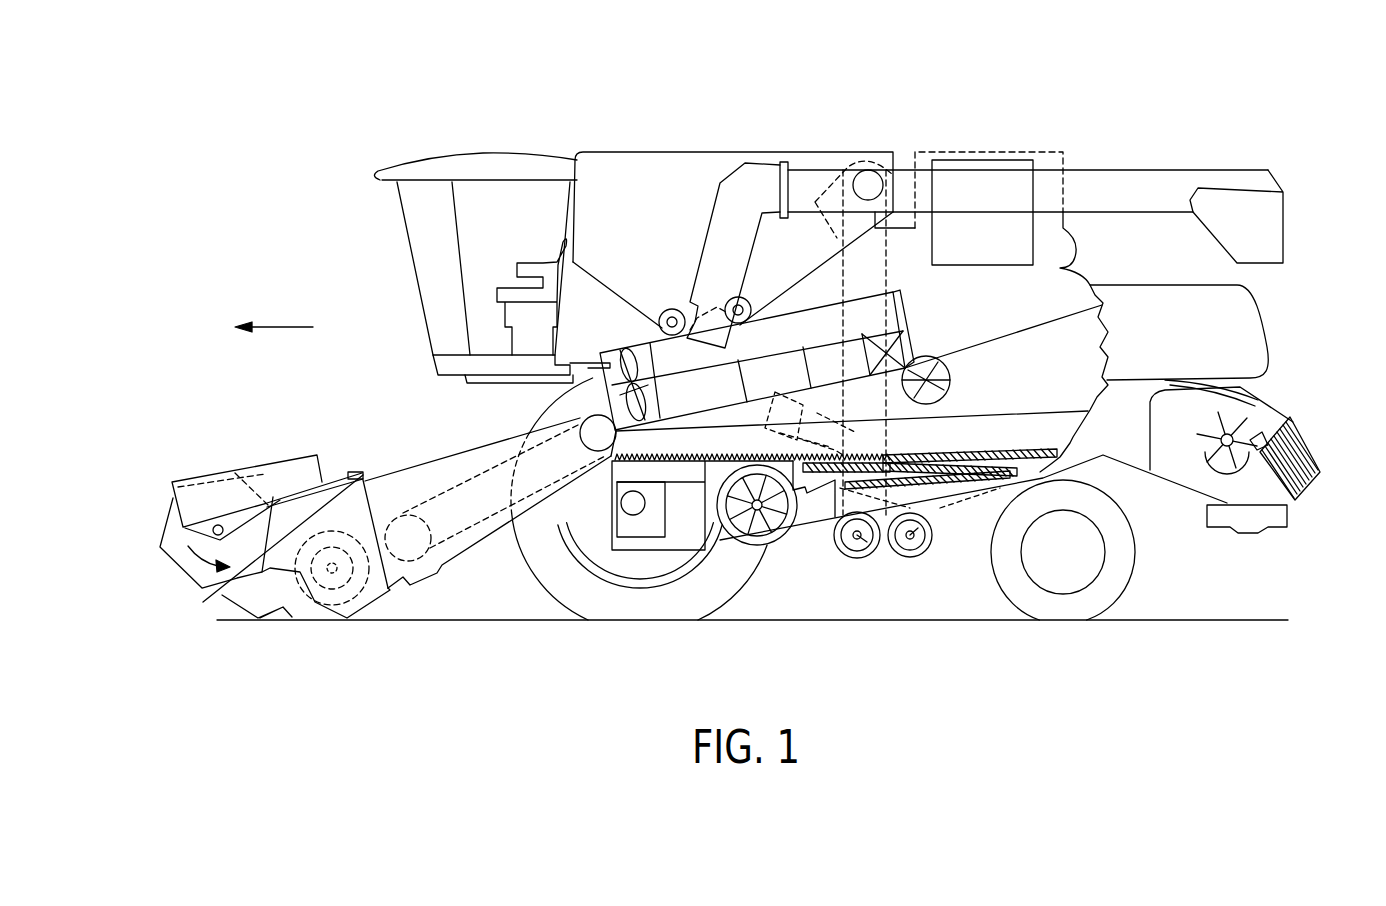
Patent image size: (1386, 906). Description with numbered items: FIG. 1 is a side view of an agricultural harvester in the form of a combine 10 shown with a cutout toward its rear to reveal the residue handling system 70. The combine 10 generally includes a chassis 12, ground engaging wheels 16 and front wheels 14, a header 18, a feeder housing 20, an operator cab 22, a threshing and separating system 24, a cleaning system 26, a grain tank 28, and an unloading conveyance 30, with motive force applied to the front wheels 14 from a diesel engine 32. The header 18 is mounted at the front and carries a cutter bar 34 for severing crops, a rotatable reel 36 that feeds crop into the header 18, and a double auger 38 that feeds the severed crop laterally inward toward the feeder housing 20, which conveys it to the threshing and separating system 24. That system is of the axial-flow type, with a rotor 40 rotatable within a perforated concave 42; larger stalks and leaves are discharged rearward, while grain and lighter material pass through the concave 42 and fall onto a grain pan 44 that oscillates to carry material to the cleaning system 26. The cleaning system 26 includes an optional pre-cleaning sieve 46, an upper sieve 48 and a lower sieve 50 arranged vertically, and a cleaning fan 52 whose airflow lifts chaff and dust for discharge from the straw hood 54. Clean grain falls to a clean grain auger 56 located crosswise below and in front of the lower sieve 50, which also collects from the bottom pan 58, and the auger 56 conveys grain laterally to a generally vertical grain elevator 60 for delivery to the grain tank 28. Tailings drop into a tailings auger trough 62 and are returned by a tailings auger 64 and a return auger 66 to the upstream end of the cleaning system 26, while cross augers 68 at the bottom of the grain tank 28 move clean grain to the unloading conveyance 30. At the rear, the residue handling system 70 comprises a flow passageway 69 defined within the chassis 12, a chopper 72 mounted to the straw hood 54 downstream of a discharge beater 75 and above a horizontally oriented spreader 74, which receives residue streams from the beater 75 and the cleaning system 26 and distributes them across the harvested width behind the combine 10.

The combine 10 is at (477, 140).
The chassis 12 is at (1095, 480).
The front wheels 14 is at (552, 582).
The ground engaging wheels 16 is at (1127, 560).
The header 18 is at (245, 458).
The feeder housing 20 is at (437, 463).
The operator cab 22 is at (413, 248).
The threshing and separating system 24 is at (557, 395).
The cleaning system 26 is at (830, 540).
The grain tank 28 is at (635, 148).
The unloading conveyance 30 is at (1160, 168).
The diesel engine 32 is at (970, 158).
The cutter bar 34 is at (260, 620).
The rotatable reel 36 is at (163, 548).
The double auger 38 is at (347, 612).
The rotor 40 is at (607, 342).
The perforated concave 42 is at (820, 325).
The grain pan 44 is at (613, 487).
The pre-cleaning sieve 46 is at (888, 453).
The upper sieve 48 is at (1030, 452).
The lower sieve 50 is at (947, 483).
The cleaning fan 52 is at (753, 540).
The straw hood 54 is at (1245, 322).
The clean grain auger 56 is at (858, 558).
The bottom pan 58 is at (1000, 487).
The grain elevator 60 is at (880, 263).
The tailings auger trough 62 is at (965, 490).
The tailings auger 64 is at (909, 558).
The return auger 66 is at (852, 418).
The cross augers 68 is at (673, 310).
The flow passageway 69 is at (1170, 410).
The residue handling system 70 is at (1300, 403).
The chopper 72 is at (1208, 418).
The spreader 74 is at (1285, 525).
The discharge beater 75 is at (950, 370).